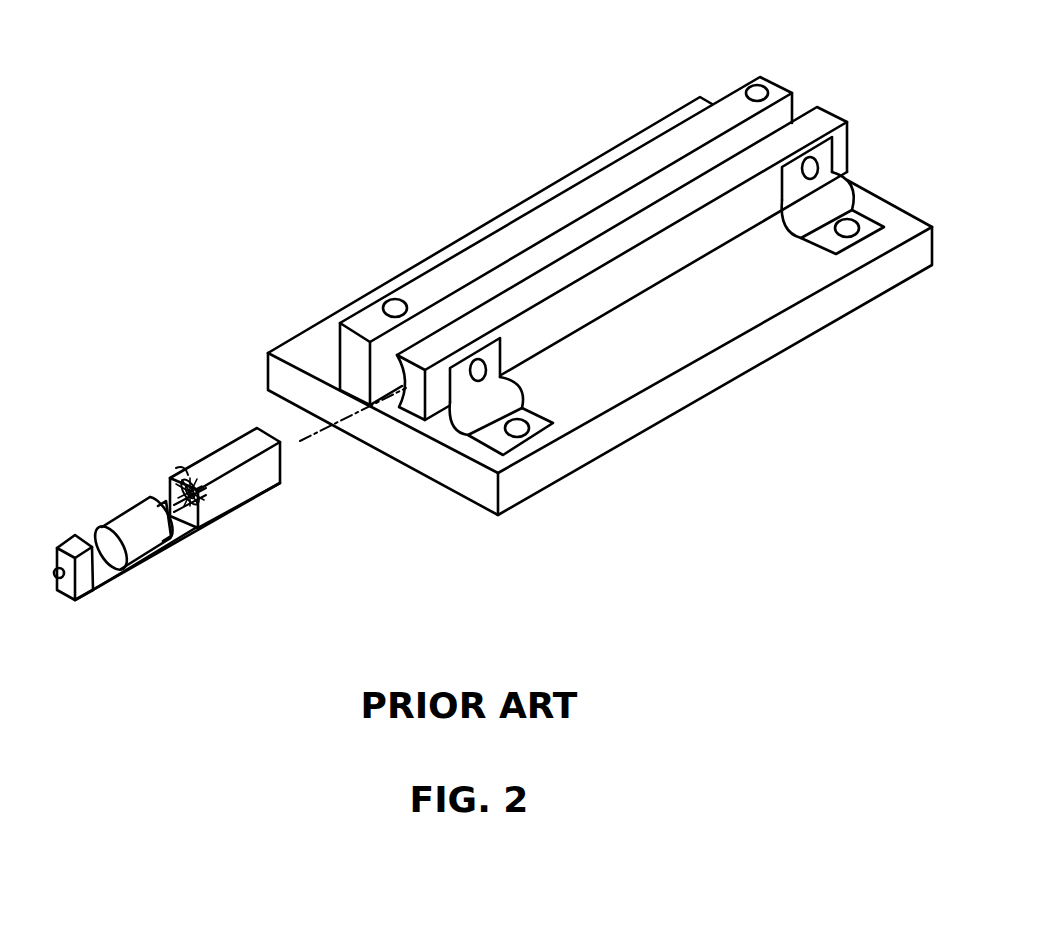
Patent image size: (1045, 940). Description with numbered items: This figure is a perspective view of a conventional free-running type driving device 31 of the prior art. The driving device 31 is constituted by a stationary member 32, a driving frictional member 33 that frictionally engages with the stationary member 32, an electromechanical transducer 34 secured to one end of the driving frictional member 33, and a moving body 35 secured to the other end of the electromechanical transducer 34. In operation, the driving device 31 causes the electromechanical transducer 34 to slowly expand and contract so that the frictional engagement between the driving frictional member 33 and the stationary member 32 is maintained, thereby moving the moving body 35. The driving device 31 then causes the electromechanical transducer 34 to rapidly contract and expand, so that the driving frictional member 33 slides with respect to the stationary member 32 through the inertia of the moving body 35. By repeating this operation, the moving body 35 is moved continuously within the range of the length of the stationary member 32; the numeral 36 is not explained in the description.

The free-running type driving device 31 is at (253, 203).
The stationary member 32 is at (578, 197).
The driving frictional member 33 is at (117, 523).
The electromechanical transducer 34 is at (173, 497).
The moving body 35 is at (228, 458).
The base plate 36 is at (591, 306).